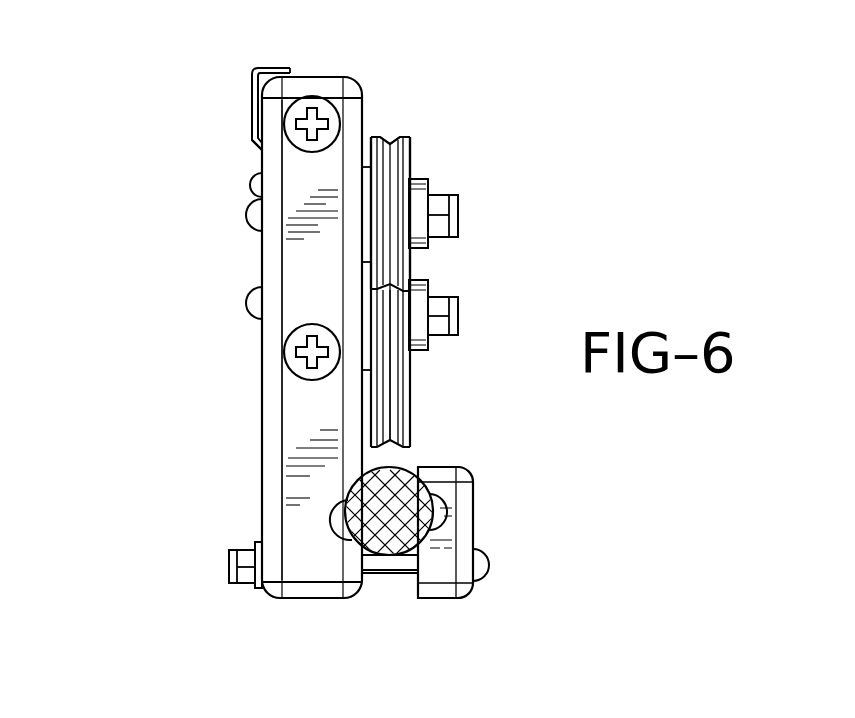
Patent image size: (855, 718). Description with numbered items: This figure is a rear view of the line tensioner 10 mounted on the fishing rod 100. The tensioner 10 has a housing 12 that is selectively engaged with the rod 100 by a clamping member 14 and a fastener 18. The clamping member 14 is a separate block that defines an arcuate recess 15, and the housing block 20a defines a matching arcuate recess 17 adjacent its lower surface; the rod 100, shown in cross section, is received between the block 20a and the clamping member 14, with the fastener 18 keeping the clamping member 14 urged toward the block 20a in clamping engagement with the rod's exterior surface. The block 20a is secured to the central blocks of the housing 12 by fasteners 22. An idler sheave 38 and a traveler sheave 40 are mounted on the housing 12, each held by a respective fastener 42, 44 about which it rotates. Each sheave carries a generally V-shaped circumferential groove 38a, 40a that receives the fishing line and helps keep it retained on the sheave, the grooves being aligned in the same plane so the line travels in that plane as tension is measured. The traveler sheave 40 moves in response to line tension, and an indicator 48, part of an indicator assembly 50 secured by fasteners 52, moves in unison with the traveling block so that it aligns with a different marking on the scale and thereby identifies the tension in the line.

The line tensioner 10 is at (210, 114).
The housing 12 is at (252, 404).
The clamping member 14 is at (478, 511).
The arcuate recess 15 is at (431, 512).
The arcuate recess 17 is at (362, 532).
The fastener 18 is at (390, 578).
The block 20a is at (264, 437).
The fastener 22 is at (312, 101).
The idler sheave 38 is at (410, 377).
The V-shaped circumferential groove 38a is at (395, 406).
The traveler sheave 40 is at (410, 154).
The V-shaped circumferential groove 40a is at (384, 138).
The fastener 42 is at (246, 303).
The fastener 44 is at (246, 215).
The indicator 48 is at (288, 68).
The indicator assembly 50 is at (250, 153).
The fastener 52 is at (250, 183).
The fishing rod 100 is at (340, 497).